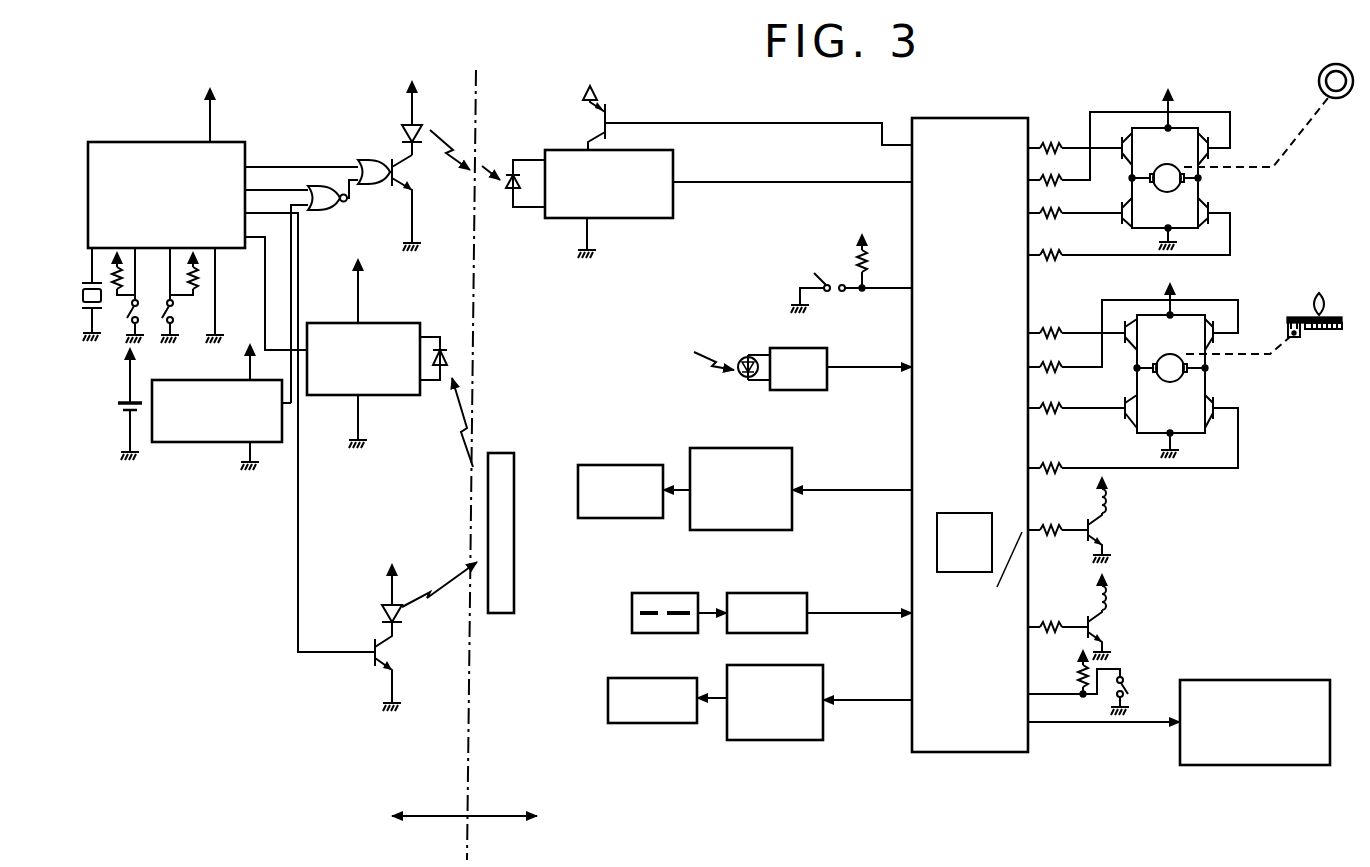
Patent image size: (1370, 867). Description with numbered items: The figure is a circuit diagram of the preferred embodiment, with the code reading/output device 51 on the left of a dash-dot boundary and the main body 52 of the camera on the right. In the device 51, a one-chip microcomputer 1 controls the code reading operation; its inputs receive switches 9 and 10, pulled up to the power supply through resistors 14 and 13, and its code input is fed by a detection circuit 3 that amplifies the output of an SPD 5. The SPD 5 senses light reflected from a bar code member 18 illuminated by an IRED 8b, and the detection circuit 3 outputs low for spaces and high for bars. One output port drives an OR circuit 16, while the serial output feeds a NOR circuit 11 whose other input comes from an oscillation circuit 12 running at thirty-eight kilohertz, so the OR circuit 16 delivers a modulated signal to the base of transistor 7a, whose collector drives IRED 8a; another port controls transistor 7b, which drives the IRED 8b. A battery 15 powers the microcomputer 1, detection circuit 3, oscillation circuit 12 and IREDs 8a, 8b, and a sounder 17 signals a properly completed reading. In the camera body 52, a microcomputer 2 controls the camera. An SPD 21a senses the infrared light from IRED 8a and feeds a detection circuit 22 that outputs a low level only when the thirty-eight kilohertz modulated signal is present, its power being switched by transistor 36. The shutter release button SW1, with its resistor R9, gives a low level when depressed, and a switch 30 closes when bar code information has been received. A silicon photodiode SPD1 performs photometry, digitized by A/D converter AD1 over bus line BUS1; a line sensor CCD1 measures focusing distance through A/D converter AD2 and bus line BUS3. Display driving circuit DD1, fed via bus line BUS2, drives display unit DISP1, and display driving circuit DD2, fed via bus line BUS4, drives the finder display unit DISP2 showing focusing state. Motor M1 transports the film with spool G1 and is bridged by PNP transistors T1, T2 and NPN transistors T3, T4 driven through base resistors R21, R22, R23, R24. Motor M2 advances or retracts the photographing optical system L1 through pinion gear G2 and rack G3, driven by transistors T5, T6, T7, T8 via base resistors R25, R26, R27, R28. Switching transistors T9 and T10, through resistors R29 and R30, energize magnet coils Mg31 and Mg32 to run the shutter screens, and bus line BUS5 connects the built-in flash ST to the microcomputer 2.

The microcomputer 1 is at (136, 142).
The microcomputer 2 is at (986, 118).
The detection circuit 3 is at (377, 323).
The SPD 5 is at (445, 350).
The transistor 7a is at (413, 172).
The transistor 7b is at (370, 667).
The IRED 8a is at (400, 133).
The IRED 8b is at (380, 614).
The switch 9 is at (138, 310).
The switch 10 is at (175, 310).
The NOR circuit 11 is at (325, 211).
The oscillation circuit 12 is at (195, 442).
The resistor 13 is at (200, 282).
The resistor 14 is at (108, 276).
The power supply battery 15 is at (126, 402).
The OR circuit 16 is at (376, 185).
The sounder 17 is at (82, 298).
The code member 18 is at (497, 613).
The SPD 21a is at (513, 196).
The detection circuit 22 is at (560, 150).
The switch 30 is at (1130, 686).
The transistor 36 is at (608, 114).
The code reading/output device 51 is at (428, 832).
The main body of the camera 52 is at (501, 832).
The shutter release button SW1 is at (836, 283).
The resistor R9 is at (866, 264).
The silicon photodiode SPD1 is at (742, 359).
The A/D converter AD1 is at (803, 348).
The A/D converter AD2 is at (770, 594).
The bus line BUS1 is at (865, 372).
The bus line BUS2 is at (858, 493).
The bus line BUS3 is at (860, 617).
The bus line BUS4 is at (865, 703).
The bus line BUS5 is at (1118, 726).
The display unit DISP1 is at (620, 463).
The display unit DISP2 is at (653, 724).
The display driving circuit DD1 is at (742, 448).
The display driving circuit DD2 is at (770, 742).
The line sensor CCD1 is at (668, 593).
The PNP transistor T1 is at (1121, 144).
The PNP transistor T2 is at (1216, 142).
The NPN transistor T3 is at (1120, 218).
The NPN transistor T4 is at (1216, 208).
The PNP transistor T5 is at (1125, 330).
The PNP transistor T6 is at (1216, 326).
The NPN transistor T7 is at (1123, 414).
The NPN transistor T8 is at (1219, 400).
The switching transistor T9 is at (1088, 540).
The switching transistor T10 is at (1084, 638).
The base resistor R21 is at (1075, 140).
The base resistor R22 is at (1129, 148).
The base resistor R23 is at (1075, 205).
The base resistor R24 is at (1129, 236).
The base resistor R25 is at (1076, 325).
The base resistor R26 is at (1133, 336).
The base resistor R27 is at (1076, 400).
The base resistor R28 is at (1133, 440).
The resistor R29 is at (1058, 522).
The resistor R30 is at (1058, 619).
The motor M1 is at (1165, 169).
The motor M2 is at (1171, 370).
The spool G1 is at (1334, 100).
The pinion gear G2 is at (1300, 340).
The rack G3 is at (1335, 332).
The photographing optical system L1 is at (1317, 293).
The magnet coil Mg31 is at (1126, 494).
The magnet coil Mg32 is at (1126, 591).
The built-in flash ST is at (1253, 680).